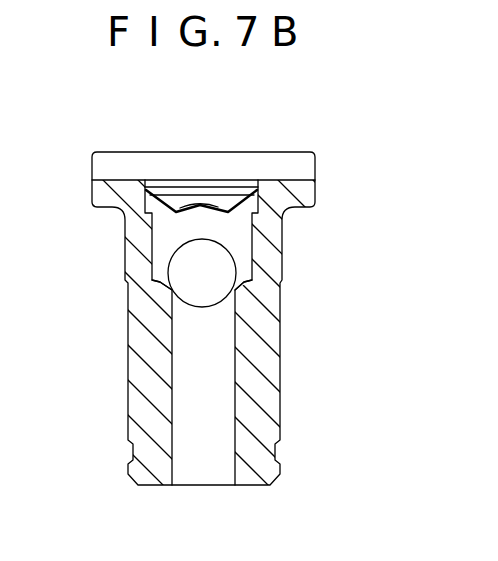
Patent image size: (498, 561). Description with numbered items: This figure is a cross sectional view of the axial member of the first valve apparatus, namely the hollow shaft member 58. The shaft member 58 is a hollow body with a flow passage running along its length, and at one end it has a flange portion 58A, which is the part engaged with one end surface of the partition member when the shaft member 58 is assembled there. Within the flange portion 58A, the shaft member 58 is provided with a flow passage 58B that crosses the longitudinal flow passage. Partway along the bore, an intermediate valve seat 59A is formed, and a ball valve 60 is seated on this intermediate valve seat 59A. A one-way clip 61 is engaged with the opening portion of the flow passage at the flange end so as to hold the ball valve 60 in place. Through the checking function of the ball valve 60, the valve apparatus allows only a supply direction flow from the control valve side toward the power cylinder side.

The shaft member 58 is at (127, 358).
The flange portion 58A is at (307, 193).
The flow passage 58B is at (273, 160).
The intermediate valve seat 59A is at (233, 277).
The ball valve 60 is at (217, 291).
The one-way clip 61 is at (178, 208).